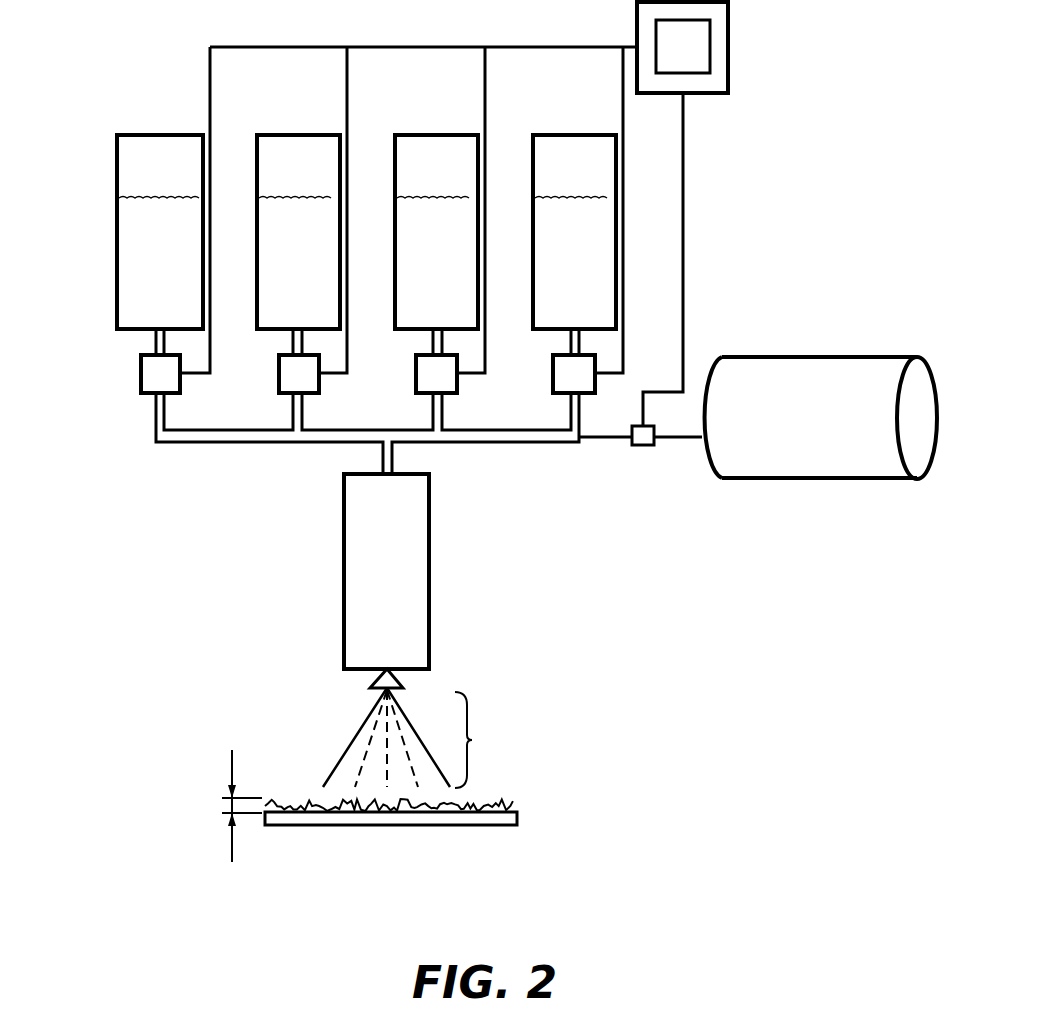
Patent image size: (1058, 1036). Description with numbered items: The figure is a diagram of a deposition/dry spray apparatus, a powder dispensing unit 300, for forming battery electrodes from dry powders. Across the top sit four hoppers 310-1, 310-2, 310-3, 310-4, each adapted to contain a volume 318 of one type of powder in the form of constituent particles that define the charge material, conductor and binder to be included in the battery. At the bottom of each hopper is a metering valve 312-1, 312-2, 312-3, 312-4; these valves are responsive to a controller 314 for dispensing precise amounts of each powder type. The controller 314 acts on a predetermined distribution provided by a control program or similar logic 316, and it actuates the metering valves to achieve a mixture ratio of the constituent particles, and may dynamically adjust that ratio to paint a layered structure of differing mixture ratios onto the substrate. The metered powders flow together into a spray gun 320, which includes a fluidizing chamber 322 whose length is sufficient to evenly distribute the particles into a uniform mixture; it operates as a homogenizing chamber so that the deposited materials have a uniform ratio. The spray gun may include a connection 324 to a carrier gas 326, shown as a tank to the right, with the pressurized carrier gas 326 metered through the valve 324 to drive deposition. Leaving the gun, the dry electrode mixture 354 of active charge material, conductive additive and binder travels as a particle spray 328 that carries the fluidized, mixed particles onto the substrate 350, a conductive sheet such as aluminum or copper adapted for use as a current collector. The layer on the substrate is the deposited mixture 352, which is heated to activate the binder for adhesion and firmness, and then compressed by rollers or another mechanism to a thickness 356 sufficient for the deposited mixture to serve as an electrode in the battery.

The powder dispensing unit 300 is at (208, 570).
The hopper 310-1 is at (190, 135).
The hopper 310-2 is at (328, 135).
The hopper 310-3 is at (465, 135).
The hopper 310-4 is at (603, 135).
The metering valve 312-1 is at (141, 370).
The metering valve 312-2 is at (279, 370).
The metering valve 312-3 is at (416, 370).
The metering valve 312-4 is at (553, 370).
The controller 314 is at (495, 214).
The control program or logic 316 is at (662, 62).
The volume of powder 318 is at (136, 250).
The spray gun 320 is at (436, 581).
The fluidizing chamber 322 is at (363, 617).
The connection to carrier gas 324 is at (643, 445).
The carrier gas 326 is at (779, 431).
The particle spray 328 is at (472, 740).
The substrate 350 is at (387, 825).
The deposited mixture 352 is at (500, 800).
The dry electrode mixture 354 is at (345, 713).
The thickness 356 is at (223, 803).